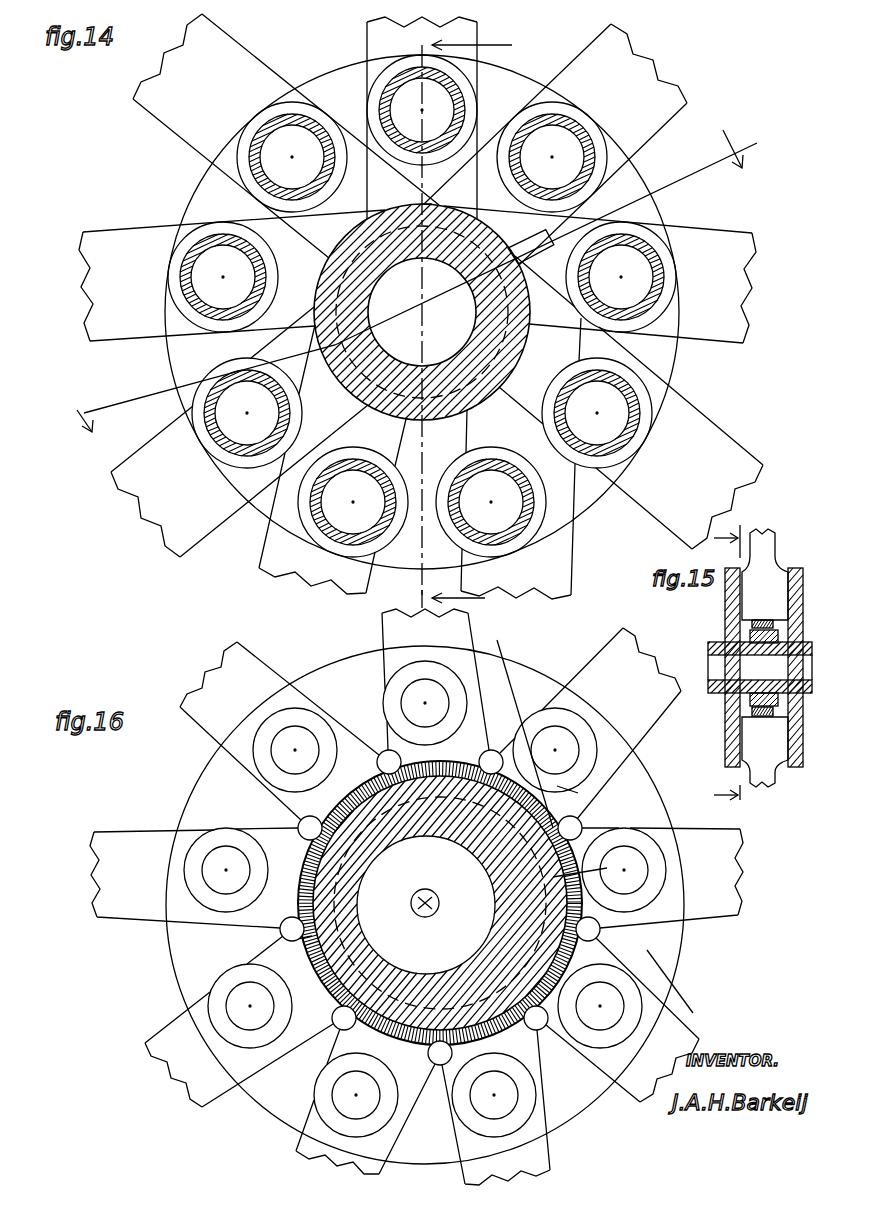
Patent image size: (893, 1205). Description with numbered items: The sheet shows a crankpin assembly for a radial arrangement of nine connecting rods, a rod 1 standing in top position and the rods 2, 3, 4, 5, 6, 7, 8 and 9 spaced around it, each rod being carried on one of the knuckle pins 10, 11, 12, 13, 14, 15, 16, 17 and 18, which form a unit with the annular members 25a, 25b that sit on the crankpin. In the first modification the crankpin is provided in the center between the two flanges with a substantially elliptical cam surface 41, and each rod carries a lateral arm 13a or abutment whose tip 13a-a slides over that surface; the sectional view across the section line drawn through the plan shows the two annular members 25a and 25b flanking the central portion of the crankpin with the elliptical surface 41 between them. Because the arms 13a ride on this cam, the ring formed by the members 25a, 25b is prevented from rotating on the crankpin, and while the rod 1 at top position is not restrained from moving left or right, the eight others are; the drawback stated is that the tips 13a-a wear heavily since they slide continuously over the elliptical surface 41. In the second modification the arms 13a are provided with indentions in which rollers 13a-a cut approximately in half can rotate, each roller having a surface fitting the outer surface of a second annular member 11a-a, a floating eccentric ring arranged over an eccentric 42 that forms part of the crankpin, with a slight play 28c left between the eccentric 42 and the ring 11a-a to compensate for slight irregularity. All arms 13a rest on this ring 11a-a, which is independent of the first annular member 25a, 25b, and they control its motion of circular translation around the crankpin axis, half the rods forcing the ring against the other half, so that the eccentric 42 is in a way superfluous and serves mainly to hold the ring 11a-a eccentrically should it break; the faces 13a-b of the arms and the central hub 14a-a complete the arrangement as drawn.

In FIG. 14, the connecting rod 1 is at (474, 52).
In FIG. 16, the connecting rod 1 is at (435, 679).
In FIG. 14, the connecting rod 2 is at (555, 144).
In FIG. 16, the connecting rod 2 is at (590, 723).
In FIG. 14, the connecting rod 3 is at (600, 274).
In FIG. 15, the connecting rod 3 is at (769, 543).
In FIG. 16, the connecting rod 3 is at (662, 878).
In FIG. 14, the connecting rod 4 is at (631, 402).
In FIG. 16, the connecting rod 4 is at (622, 1020).
In FIG. 14, the connecting rod 5 is at (521, 458).
In FIG. 16, the connecting rod 5 is at (496, 1107).
In FIG. 14, the connecting rod 6 is at (332, 459).
In FIG. 16, the connecting rod 6 is at (365, 1101).
In FIG. 14, the connecting rod 7 is at (239, 432).
In FIG. 15, the connecting rod 7 is at (770, 777).
In FIG. 16, the connecting rod 7 is at (239, 1021).
In FIG. 14, the connecting rod 8 is at (232, 275).
In FIG. 16, the connecting rod 8 is at (194, 878).
In FIG. 14, the connecting rod 9 is at (286, 136).
In FIG. 16, the connecting rod 9 is at (279, 731).
In FIG. 14, the pin 10 is at (458, 100).
In FIG. 14, the pin 11 is at (586, 181).
In FIG. 14, the pin 12 is at (634, 318).
In FIG. 14, the pin 13 is at (597, 455).
In FIG. 14, the pin 14 is at (452, 531).
In FIG. 15, the pin 14 is at (718, 665).
In FIG. 14, the pin 15 is at (279, 503).
In FIG. 14, the pin 16 is at (300, 416).
In FIG. 14, the pin 17 is at (212, 314).
In FIG. 14, the pin 18 is at (307, 138).
In FIG. 14, the arm 13a is at (422, 200).
In FIG. 16, the arm 13a is at (385, 740).
In FIG. 14, the tip of arm 13a-a is at (431, 206).
In FIG. 16, the tip of arm 13a-a is at (378, 760).
In FIG. 16, the arm face 13a-b is at (615, 819).
In FIG. 14, the central shaft hub 14a-a is at (472, 282).
In FIG. 15, the central shaft hub 14a-a is at (760, 667).
In FIG. 16, the central shaft hub 14a-a is at (478, 866).
In FIG. 16, the second annular member 11a-a is at (284, 939).
In FIG. 14, the annular member 25a is at (638, 190).
In FIG. 15, the annular member 25a is at (804, 656).
In FIG. 16, the annular member 25a is at (640, 756).
In FIG. 15, the annular member 25b is at (733, 598).
In FIG. 16, the play 28c is at (580, 794).
In FIG. 14, the elliptical surface 41 is at (516, 250).
In FIG. 15, the elliptical surface 41 is at (750, 632).
In FIG. 16, the eccentric 42 is at (590, 869).